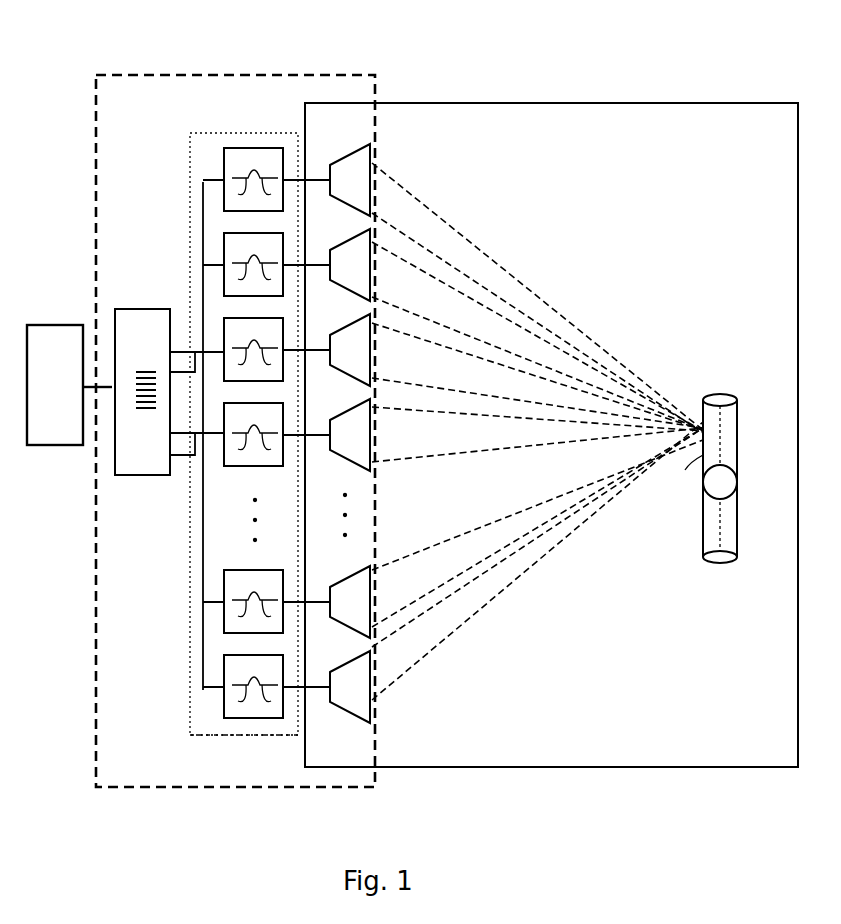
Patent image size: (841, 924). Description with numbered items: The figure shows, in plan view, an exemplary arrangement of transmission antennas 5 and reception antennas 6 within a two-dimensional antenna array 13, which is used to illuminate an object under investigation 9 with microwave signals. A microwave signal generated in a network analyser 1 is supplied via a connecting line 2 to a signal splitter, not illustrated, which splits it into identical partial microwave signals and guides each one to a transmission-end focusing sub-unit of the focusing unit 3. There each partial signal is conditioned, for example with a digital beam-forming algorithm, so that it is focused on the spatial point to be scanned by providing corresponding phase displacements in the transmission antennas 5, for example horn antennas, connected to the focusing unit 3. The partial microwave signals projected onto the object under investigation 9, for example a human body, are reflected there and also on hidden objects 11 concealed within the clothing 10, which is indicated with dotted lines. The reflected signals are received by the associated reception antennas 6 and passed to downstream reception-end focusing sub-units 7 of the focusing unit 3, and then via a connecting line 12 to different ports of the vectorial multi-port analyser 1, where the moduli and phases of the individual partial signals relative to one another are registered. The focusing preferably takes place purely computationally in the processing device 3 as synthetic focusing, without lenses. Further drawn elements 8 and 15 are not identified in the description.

The network analyser 1 is at (655, 114).
The connecting line 2 is at (140, 309).
The focusing unit 3 is at (46, 325).
The transmission antennas 5 is at (203, 182).
The reception antennas 6 is at (338, 204).
The reception-end focusing sub-units 7 is at (203, 350).
The light beams 8 is at (378, 160).
The object under investigation 9 is at (738, 442).
The clothing 10 is at (737, 398).
The hidden objects 11 is at (695, 465).
The connecting line 12 is at (703, 525).
The two-dimensional antenna array 13 is at (268, 75).
The bus line 15 is at (192, 735).